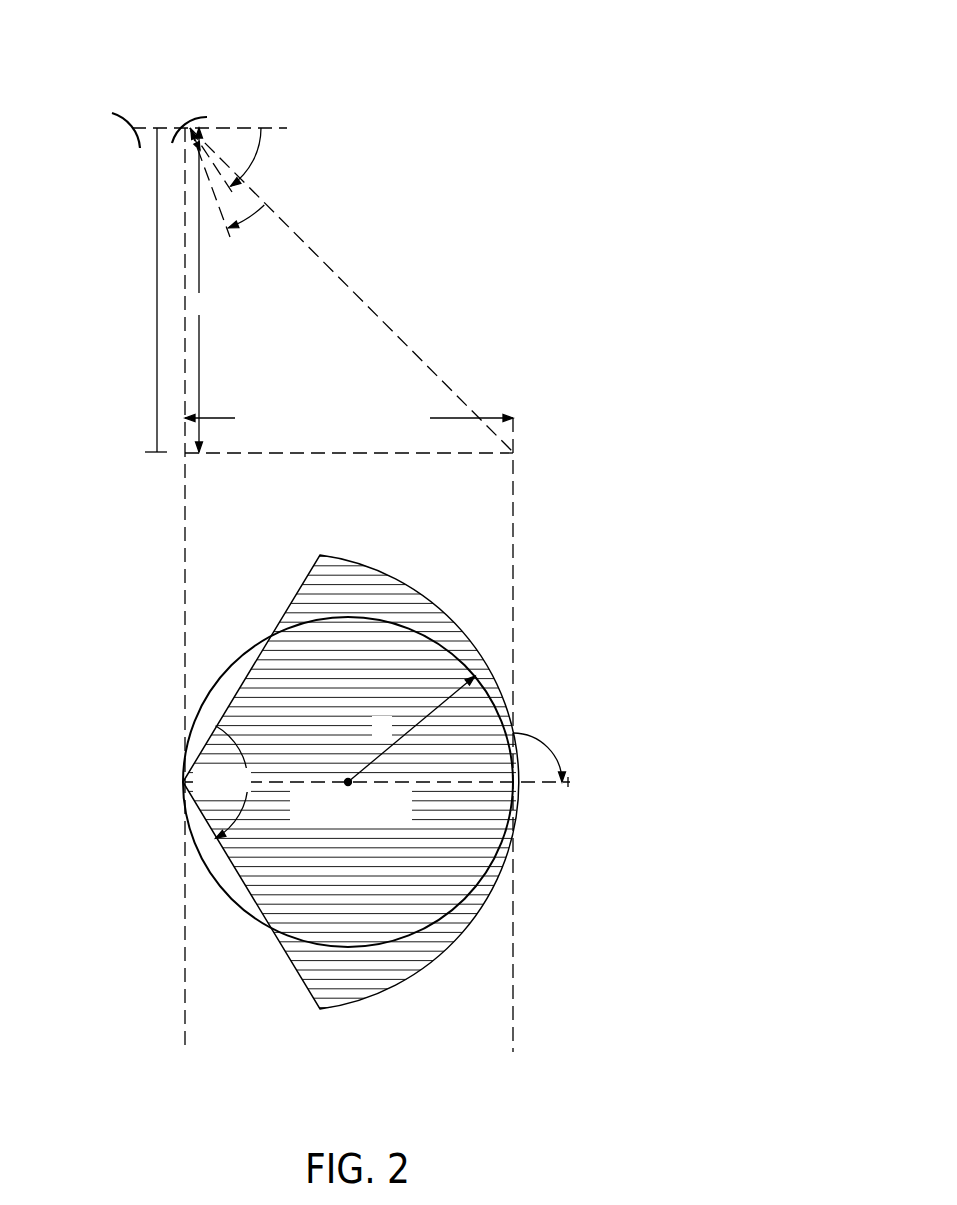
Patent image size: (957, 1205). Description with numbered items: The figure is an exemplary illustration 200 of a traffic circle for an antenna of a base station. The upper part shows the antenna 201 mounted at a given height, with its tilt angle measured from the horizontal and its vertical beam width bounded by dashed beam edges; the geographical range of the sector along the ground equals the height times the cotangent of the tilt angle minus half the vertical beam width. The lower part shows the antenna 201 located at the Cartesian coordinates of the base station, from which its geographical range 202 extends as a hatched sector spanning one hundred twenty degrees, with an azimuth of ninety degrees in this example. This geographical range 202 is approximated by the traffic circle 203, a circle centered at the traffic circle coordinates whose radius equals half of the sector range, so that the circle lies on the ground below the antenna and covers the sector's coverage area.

The exemplary illustration 200 is at (614, 98).
The antenna 201 is at (191, 127).
The geographical range 202 is at (393, 581).
The traffic circle 203 is at (233, 663).